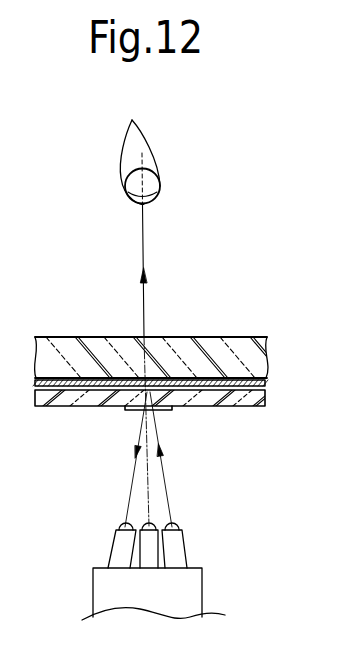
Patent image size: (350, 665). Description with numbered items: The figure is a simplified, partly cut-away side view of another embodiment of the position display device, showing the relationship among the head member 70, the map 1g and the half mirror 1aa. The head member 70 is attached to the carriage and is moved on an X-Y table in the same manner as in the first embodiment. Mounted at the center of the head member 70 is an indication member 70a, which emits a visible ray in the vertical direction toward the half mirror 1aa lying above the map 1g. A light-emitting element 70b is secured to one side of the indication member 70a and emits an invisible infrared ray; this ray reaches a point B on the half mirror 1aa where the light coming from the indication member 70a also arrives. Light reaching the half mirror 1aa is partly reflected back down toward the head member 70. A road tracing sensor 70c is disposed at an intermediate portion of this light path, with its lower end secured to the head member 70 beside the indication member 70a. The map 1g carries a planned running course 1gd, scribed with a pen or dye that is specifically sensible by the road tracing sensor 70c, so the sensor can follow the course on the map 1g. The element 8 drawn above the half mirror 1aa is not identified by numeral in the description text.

The light source lamp 8 is at (152, 190).
The point B is at (155, 382).
The half mirror 1aa is at (262, 350).
The map 1g is at (262, 397).
The planned running course 1gd is at (172, 410).
The head member 70 is at (185, 593).
The indication member 70a is at (148, 553).
The light-emitting element 70b is at (178, 540).
The road tracing sensor 70c is at (120, 547).